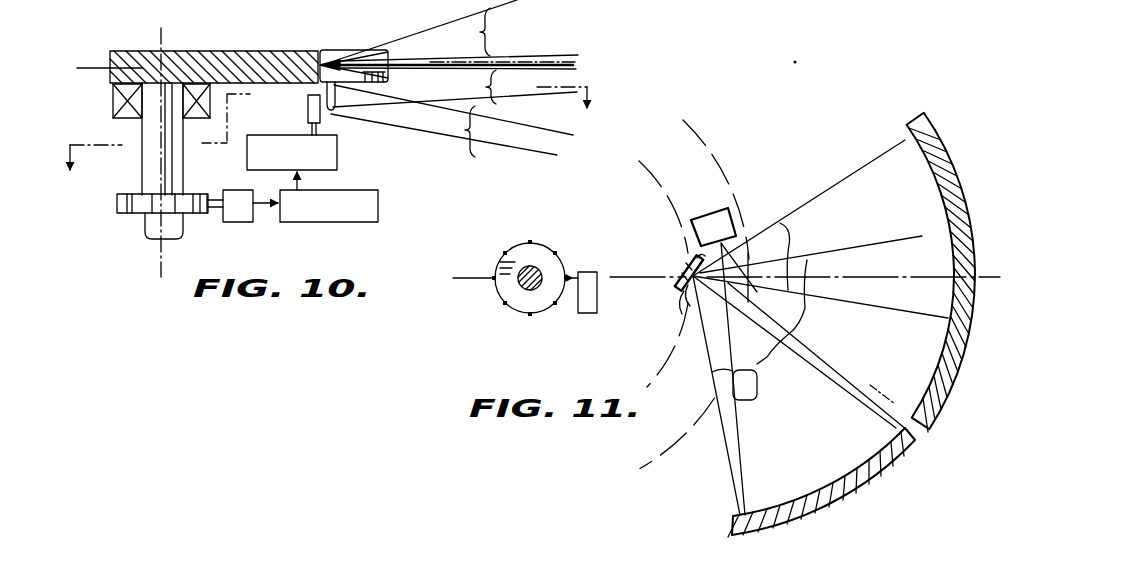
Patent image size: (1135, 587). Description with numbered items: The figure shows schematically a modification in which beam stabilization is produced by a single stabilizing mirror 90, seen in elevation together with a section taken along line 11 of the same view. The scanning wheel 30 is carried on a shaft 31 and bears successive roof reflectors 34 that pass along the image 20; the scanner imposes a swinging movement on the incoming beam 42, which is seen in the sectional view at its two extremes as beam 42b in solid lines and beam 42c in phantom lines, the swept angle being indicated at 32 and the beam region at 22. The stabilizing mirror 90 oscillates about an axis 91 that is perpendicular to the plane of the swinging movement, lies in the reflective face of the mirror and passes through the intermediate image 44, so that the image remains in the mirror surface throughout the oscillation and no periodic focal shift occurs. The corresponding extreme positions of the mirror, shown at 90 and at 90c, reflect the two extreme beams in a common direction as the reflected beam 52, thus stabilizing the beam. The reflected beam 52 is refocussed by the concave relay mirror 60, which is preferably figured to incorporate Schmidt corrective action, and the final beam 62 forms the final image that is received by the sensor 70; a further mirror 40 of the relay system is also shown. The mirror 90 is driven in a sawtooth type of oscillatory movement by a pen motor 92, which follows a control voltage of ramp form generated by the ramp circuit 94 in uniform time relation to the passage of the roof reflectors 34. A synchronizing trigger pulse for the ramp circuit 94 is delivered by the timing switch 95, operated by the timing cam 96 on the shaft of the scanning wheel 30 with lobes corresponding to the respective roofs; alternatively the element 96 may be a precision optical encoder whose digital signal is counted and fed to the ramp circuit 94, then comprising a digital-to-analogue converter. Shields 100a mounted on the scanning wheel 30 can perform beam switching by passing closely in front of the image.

In FIG. 10, the section line 11— 11 is at (92, 38).
In FIG. 10, the image 20 is at (337, 50).
In FIG. 10, the light beam 22 is at (505, 32).
In FIG. 10, the scanning wheel 30 is at (268, 51).
In FIG. 11, the scanning wheel 30 is at (673, 458).
In FIG. 10, the shaft 31 is at (161, 258).
In FIG. 11, the shaft 31 is at (518, 288).
In FIG. 10, the scan angle 32 is at (503, 102).
In FIG. 10, the roof reflectors 34 is at (372, 52).
In FIG. 11, the mirror 40 is at (944, 387).
In FIG. 10, the incoming beam 42 is at (453, 131).
In FIG. 11, the incoming beam at one extreme 42b is at (810, 212).
In FIG. 11, the incoming beam at other extreme 42c is at (806, 312).
In FIG. 10, the intermediate image 44 is at (336, 116).
In FIG. 11, the intermediate image 44 is at (700, 318).
In FIG. 11, the reflected beam 52 is at (757, 402).
In FIG. 11, the relay mirror 60 is at (885, 468).
In FIG. 11, the final beam 62 is at (758, 368).
In FIG. 11, the sensor 70 is at (737, 212).
In FIG. 10, the stabilizing mirror 90 is at (308, 118).
In FIG. 11, the stabilizing mirror 90 is at (687, 264).
In FIG. 11, the mirror extreme position 90c is at (680, 286).
In FIG. 10, the axis of oscillation 91 is at (316, 90).
In FIG. 11, the axis of oscillation 91 is at (701, 256).
In FIG. 10, the pen motor 92 is at (337, 157).
In FIG. 10, the ramp circuit 94 is at (366, 222).
In FIG. 10, the timing switch 95 is at (234, 222).
In FIG. 11, the timing switch 95 is at (590, 272).
In FIG. 10, the timing cam 96 is at (118, 198).
In FIG. 11, the timing cam 96 is at (540, 252).
In FIG. 10, the shields 100a is at (336, 97).